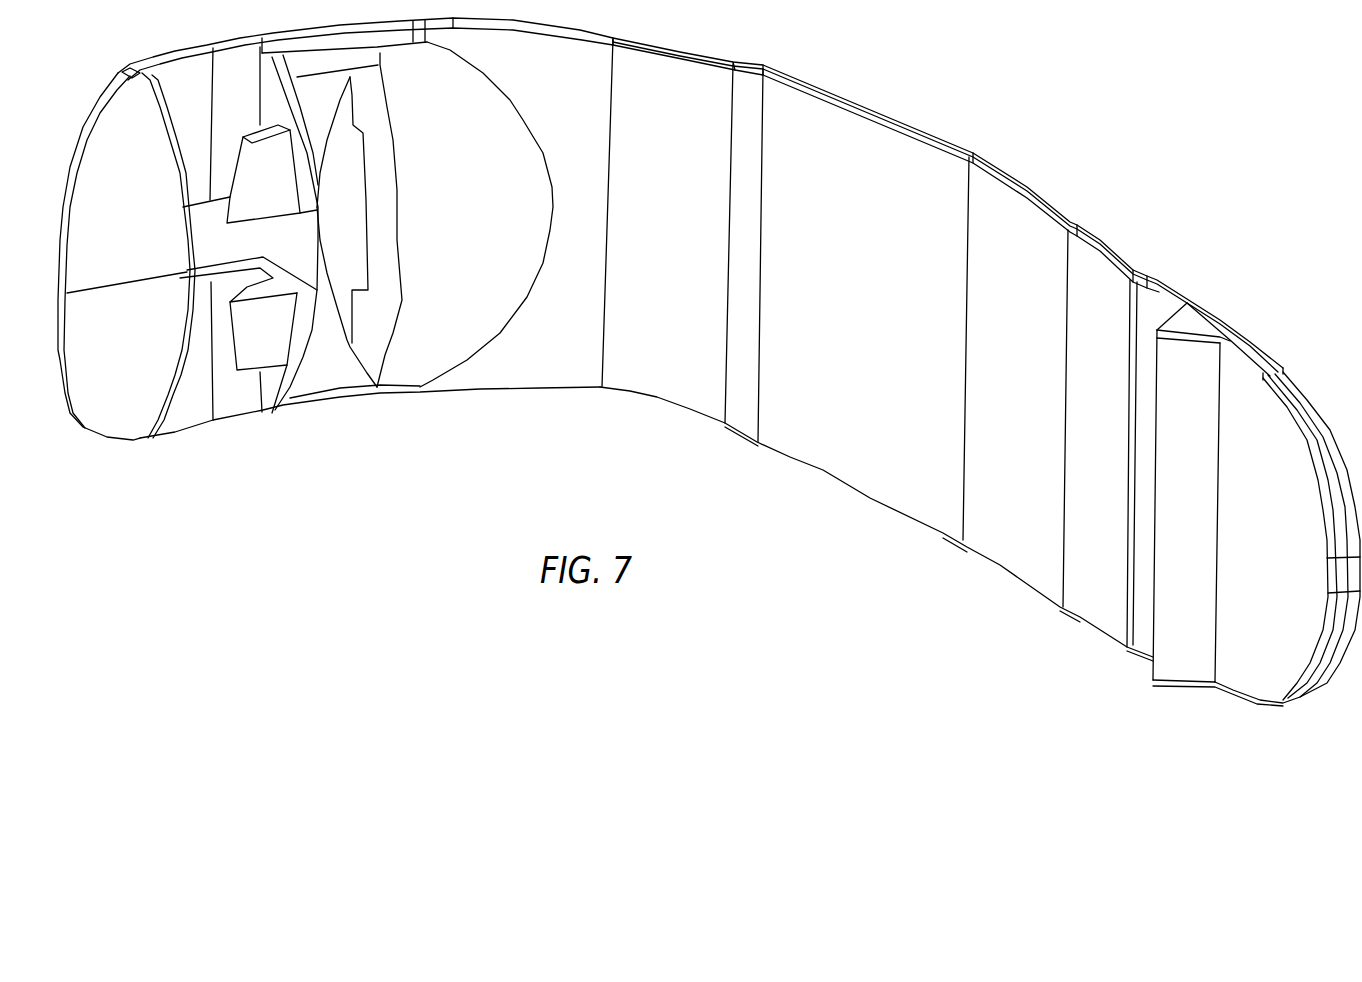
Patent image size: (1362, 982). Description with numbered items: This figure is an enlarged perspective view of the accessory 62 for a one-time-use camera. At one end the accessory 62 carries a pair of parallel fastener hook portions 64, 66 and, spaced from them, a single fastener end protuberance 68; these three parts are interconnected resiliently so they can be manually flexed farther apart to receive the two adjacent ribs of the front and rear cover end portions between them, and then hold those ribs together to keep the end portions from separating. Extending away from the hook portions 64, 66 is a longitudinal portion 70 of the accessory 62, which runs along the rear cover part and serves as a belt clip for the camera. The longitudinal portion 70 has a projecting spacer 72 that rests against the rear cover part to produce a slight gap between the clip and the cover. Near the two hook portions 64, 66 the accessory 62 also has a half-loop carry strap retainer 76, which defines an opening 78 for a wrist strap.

The accessory 62 is at (612, 402).
The fastener hook portion 64 is at (265, 152).
The fastener hook portion 66 is at (271, 296).
The fastener end protuberance 68 is at (183, 258).
The longitudinal portion 70 is at (815, 455).
The projecting spacer 72 is at (1156, 682).
The half-loop carry strap retainer 76 is at (312, 257).
The opening 78 is at (351, 186).